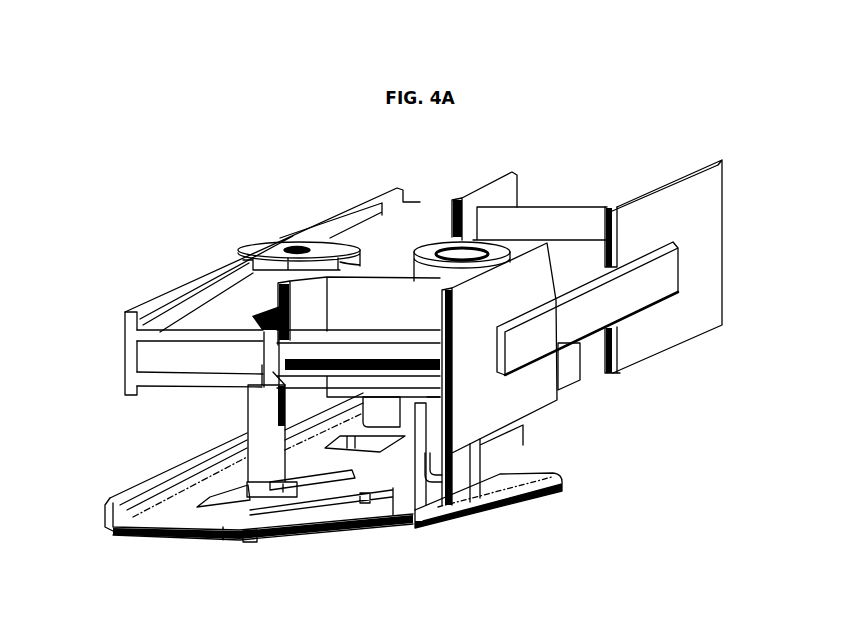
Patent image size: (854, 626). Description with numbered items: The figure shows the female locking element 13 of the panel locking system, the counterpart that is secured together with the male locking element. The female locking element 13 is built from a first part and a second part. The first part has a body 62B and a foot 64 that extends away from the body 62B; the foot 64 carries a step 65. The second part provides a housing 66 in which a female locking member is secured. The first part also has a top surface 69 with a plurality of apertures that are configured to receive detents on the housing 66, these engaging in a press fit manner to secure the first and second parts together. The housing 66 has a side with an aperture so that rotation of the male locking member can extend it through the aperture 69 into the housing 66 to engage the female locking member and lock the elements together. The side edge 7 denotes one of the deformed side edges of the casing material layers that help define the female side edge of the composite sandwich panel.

The side edge 7 is at (240, 498).
The female locking element 13 is at (665, 439).
The body 62B is at (492, 468).
The foot 64 is at (183, 537).
The step 65 is at (252, 540).
The housing 66 is at (152, 340).
The top surface 69 is at (363, 243).